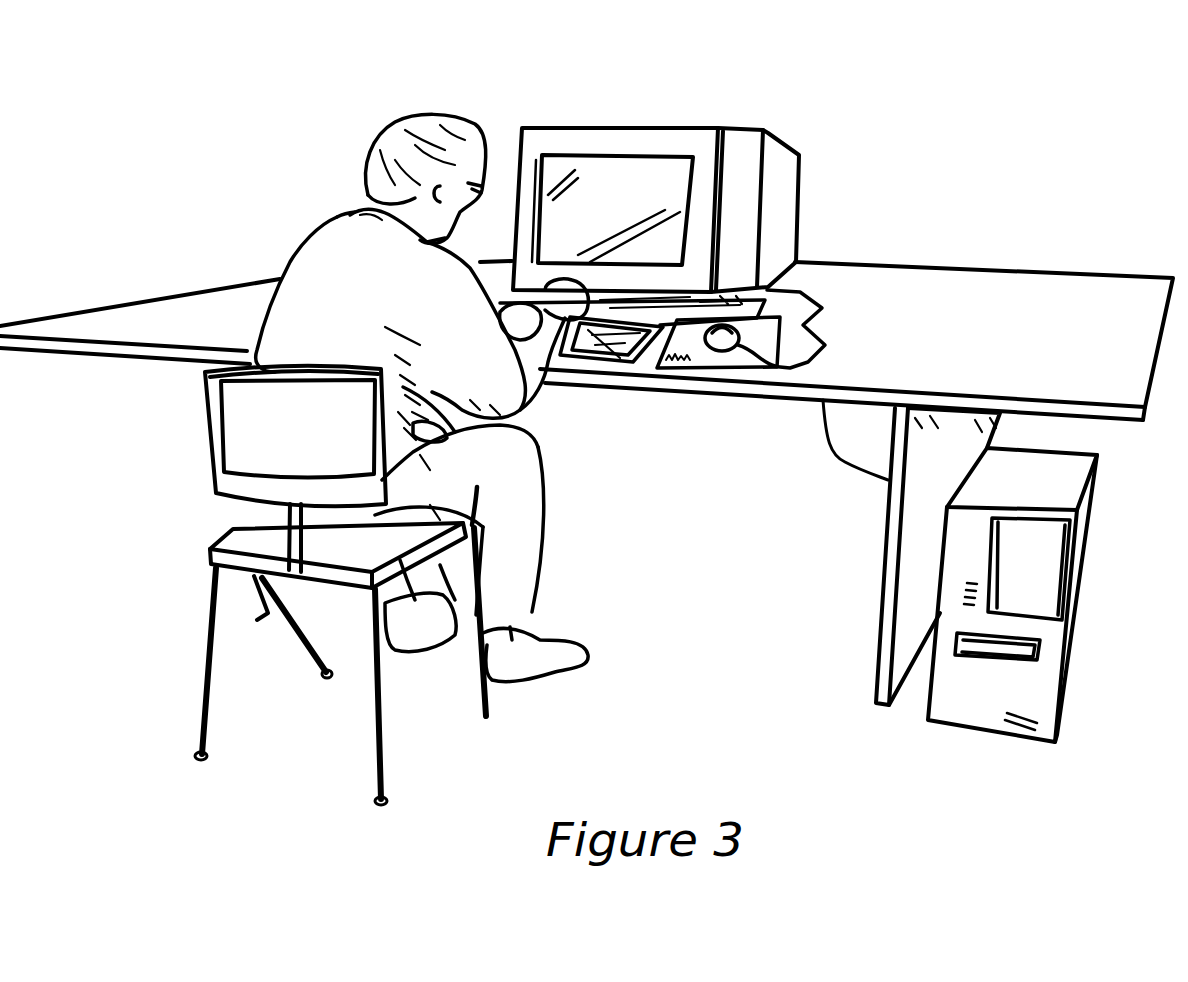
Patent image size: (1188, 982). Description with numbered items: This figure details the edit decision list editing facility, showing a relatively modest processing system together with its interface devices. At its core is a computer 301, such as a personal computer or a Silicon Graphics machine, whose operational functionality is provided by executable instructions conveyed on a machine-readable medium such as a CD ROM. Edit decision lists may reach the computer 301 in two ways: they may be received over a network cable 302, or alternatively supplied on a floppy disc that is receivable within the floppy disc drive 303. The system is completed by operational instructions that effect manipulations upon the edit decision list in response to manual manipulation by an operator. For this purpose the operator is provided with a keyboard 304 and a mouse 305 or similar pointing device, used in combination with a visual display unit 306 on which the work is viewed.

The computer 301 is at (1070, 642).
The network cable 302 is at (1082, 637).
The floppy disc drive 303 is at (990, 650).
The keyboard 304 is at (600, 335).
The mouse 305 is at (703, 355).
The visual display unit 306 is at (740, 163).